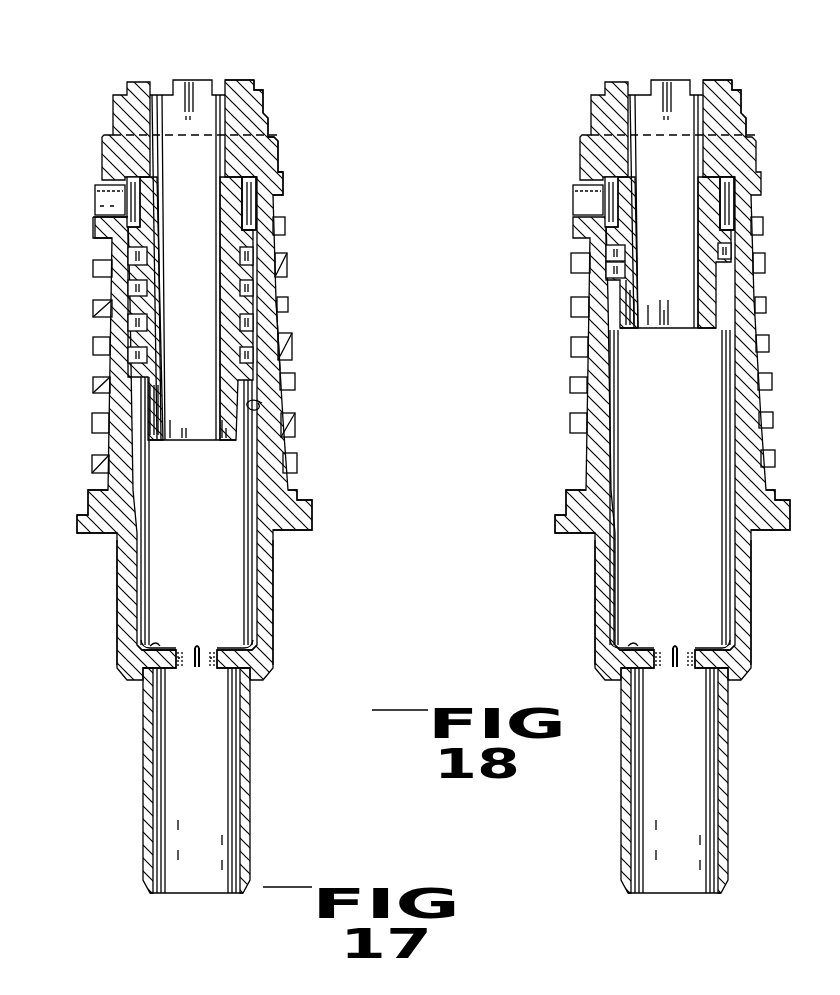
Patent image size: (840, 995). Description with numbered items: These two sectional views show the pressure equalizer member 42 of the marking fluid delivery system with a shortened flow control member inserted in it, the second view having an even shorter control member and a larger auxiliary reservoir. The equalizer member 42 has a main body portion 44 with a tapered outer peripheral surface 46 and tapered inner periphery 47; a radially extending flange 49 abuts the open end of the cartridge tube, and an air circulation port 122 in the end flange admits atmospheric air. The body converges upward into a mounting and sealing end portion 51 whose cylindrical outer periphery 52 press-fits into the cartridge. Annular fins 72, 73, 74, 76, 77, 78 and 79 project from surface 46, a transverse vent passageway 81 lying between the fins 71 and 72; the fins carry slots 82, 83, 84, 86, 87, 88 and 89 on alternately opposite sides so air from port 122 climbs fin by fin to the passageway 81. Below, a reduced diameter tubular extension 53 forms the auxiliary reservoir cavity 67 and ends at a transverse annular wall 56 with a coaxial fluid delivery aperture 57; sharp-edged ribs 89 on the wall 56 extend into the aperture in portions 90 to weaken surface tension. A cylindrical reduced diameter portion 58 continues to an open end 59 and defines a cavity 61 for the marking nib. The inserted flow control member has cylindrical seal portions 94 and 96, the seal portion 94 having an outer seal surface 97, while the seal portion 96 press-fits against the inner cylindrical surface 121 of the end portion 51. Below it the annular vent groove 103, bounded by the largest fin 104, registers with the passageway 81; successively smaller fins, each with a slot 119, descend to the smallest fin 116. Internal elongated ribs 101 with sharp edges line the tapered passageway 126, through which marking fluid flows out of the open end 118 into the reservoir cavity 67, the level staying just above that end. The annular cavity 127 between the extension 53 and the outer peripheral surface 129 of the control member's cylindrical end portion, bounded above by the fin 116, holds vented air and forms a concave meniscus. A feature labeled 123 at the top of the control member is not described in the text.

In FIG. 17, the pressure equalizer member 42 is at (84, 278).
In FIG. 17, the main body portion 44 is at (272, 482).
In FIG. 17, the tapered outer peripheral surface 46 is at (280, 322).
In FIG. 17, the tapered inner periphery 47 is at (262, 403).
In FIG. 17, the radially extending flange 49 is at (305, 520).
In FIG. 18, the radially extending flange 49 is at (787, 527).
In FIG. 17, the mounting and sealing end portion 51 is at (265, 158).
In FIG. 17, the outer periphery 52 is at (107, 147).
In FIG. 18, the outer periphery 52 is at (576, 131).
In FIG. 17, the tubular extension 53 is at (122, 620).
In FIG. 18, the tubular extension 53 is at (640, 602).
In FIG. 17, the annular wall portion 56 is at (157, 661).
In FIG. 18, the annular wall portion 56 is at (595, 657).
In FIG. 17, the fluid delivery aperture 57 is at (220, 663).
In FIG. 18, the fluid delivery aperture 57 is at (728, 687).
In FIG. 17, the reduced diameter portion 58 is at (245, 762).
In FIG. 18, the reduced diameter portion 58 is at (702, 780).
In FIG. 17, the open end 59 is at (197, 895).
In FIG. 18, the open end 59 is at (678, 918).
In FIG. 17, the cylindrical cavity 61 is at (195, 762).
In FIG. 18, the cylindrical cavity 61 is at (639, 780).
In FIG. 17, the auxiliary reservoir cavity 67 is at (204, 559).
In FIG. 18, the auxiliary reservoir cavity 67 is at (670, 536).
In FIG. 17, the fin 71 is at (113, 167).
In FIG. 18, the fin 71 is at (669, 203).
In FIG. 17, the annular fin 72 is at (105, 228).
In FIG. 17, the annular fin 73 is at (283, 265).
In FIG. 17, the annular fin 74 is at (105, 307).
In FIG. 17, the annular fin 76 is at (285, 344).
In FIG. 17, the annular fin 77 is at (100, 385).
In FIG. 17, the annular fin 78 is at (287, 425).
In FIG. 17, the annular fin 79 is at (98, 463).
In FIG. 17, the transverse passageway 81 is at (118, 200).
In FIG. 17, the slot 82 is at (280, 227).
In FIG. 17, the slot 83 is at (103, 268).
In FIG. 17, the slot 84 is at (283, 305).
In FIG. 17, the slot 86 is at (102, 345).
In FIG. 17, the slot 87 is at (287, 380).
In FIG. 17, the slot 88 is at (100, 422).
In FIG. 17, the slot 89 is at (290, 462).
In FIG. 18, the slot 89 is at (643, 623).
In FIG. 17, the rib portions 90 is at (192, 664).
In FIG. 18, the rib portions 90 is at (671, 682).
In FIG. 17, the seal portion 94 is at (258, 100).
In FIG. 18, the seal portion 94 is at (772, 98).
In FIG. 17, the seal portion 96 is at (132, 165).
In FIG. 17, the outer seal surface 97 is at (268, 116).
In FIG. 18, the outer seal surface 97 is at (777, 129).
In FIG. 17, the elongated ribs 101 is at (180, 85).
In FIG. 18, the elongated ribs 101 is at (665, 78).
In FIG. 17, the annular vent groove 103 is at (252, 216).
In FIG. 18, the annular vent groove 103 is at (772, 203).
In FIG. 17, the annular fin 104 is at (133, 236).
In FIG. 18, the fin 116 is at (694, 380).
In FIG. 17, the open end 118 is at (228, 442).
In FIG. 18, the open end 118 is at (709, 485).
In FIG. 17, the slot 119 is at (247, 252).
In FIG. 18, the slot 119 is at (668, 211).
In FIG. 17, the inner cylindrical surface 121 is at (262, 178).
In FIG. 17, the air circulation port 122 is at (97, 510).
In FIG. 18, the air circulation port 122 is at (545, 511).
In FIG. 17, the cap top 123 is at (240, 84).
In FIG. 18, the cap top 123 is at (733, 64).
In FIG. 17, the tapered passageway 126 is at (212, 274).
In FIG. 17, the annular cavity 127 is at (143, 445).
In FIG. 18, the annular cavity 127 is at (642, 487).
In FIG. 17, the outer peripheral surface 129 is at (160, 406).
In FIG. 18, the outer peripheral surface 129 is at (660, 292).